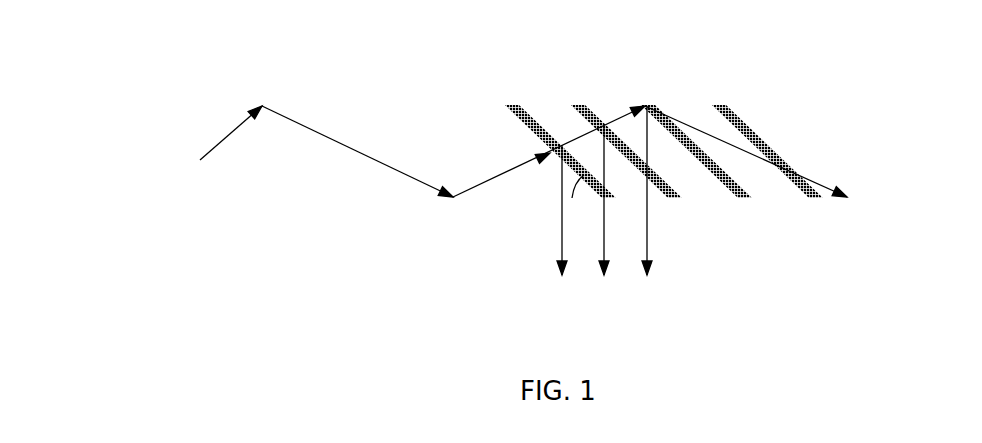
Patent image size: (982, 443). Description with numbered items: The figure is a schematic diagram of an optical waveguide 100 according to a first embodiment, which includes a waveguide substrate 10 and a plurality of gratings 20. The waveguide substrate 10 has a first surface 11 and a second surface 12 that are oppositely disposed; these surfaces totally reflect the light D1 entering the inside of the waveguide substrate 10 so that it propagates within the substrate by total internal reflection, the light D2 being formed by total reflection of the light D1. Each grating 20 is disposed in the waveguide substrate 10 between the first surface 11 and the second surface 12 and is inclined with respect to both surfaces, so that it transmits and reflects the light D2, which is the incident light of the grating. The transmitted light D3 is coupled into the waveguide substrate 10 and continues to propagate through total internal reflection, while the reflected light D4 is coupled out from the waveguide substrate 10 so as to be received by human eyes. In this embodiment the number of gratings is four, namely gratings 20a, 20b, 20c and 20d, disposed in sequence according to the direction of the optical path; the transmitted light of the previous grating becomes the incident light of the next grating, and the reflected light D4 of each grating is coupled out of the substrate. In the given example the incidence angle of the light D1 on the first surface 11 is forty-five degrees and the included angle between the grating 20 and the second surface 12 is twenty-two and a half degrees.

The optical waveguide 100 is at (92, 30).
The waveguide substrate 10 is at (380, 182).
The first surface 11 is at (332, 105).
The second surface 12 is at (300, 198).
The grating 20 is at (656, 154).
The grating 20a is at (521, 112).
The grating 20b is at (583, 113).
The grating 20c is at (660, 120).
The grating 20d is at (723, 113).
The light D1 is at (225, 140).
The light D2 is at (485, 190).
The transmitted light D3 is at (562, 127).
The reflected light D4 is at (647, 213).